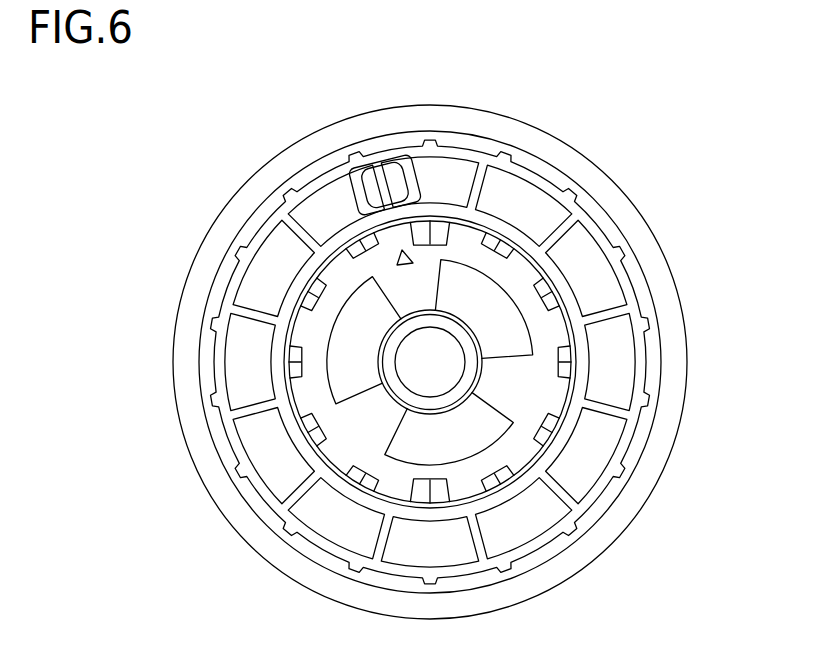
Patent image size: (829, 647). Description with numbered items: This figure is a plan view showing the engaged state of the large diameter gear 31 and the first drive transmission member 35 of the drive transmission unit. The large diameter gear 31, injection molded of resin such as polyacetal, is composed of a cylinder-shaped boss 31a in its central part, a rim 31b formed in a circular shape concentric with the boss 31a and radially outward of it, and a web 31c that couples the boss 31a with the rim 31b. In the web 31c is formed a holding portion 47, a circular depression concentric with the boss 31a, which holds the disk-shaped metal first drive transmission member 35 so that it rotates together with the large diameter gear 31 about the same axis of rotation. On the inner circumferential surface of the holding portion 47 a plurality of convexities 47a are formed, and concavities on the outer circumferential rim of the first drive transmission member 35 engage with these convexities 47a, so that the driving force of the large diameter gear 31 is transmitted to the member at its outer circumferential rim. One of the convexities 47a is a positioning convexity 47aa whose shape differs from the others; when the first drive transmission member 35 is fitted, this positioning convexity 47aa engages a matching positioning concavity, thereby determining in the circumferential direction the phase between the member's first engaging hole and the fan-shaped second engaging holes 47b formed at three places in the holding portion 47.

The large diameter gear 31 is at (661, 177).
The boss 31a is at (450, 397).
The rim 31b is at (186, 348).
The web 31c is at (592, 287).
The first drive transmission member 35 is at (348, 437).
The holding portion 47 is at (300, 424).
The convexities 47a is at (571, 360).
The positioning convexity 47aa is at (428, 228).
The second engaging holes 47b is at (362, 325).